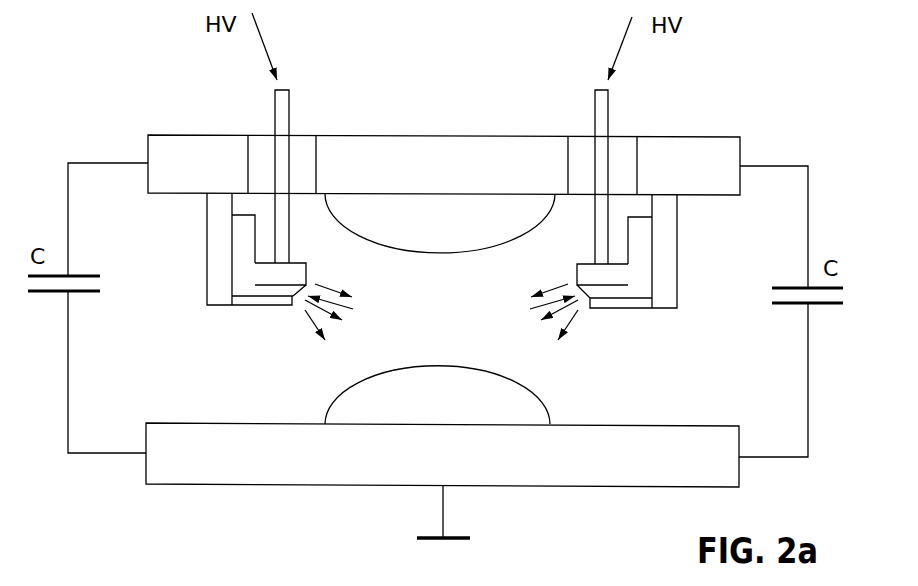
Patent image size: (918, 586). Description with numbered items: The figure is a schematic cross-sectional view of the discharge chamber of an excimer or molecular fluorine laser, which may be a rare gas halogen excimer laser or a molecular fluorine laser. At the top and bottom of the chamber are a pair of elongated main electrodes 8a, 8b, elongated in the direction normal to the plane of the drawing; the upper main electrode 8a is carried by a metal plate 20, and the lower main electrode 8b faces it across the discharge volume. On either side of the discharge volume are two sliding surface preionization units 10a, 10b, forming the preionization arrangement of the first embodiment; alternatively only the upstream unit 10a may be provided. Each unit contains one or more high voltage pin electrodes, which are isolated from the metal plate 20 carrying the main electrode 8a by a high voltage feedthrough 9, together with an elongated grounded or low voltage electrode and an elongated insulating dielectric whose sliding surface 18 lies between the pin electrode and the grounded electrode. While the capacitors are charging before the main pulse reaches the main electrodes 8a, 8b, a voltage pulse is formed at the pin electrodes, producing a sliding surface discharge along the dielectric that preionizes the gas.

The main electrode 8a is at (420, 210).
The main electrode 8b is at (474, 397).
The high voltage feedthrough 9 is at (622, 162).
The upper electrode plate 20 is at (528, 158).
The sliding surface preionization unit 10a is at (207, 290).
The sliding surface preionization unit 10b is at (677, 291).
The sliding surface 18 is at (441, 312).